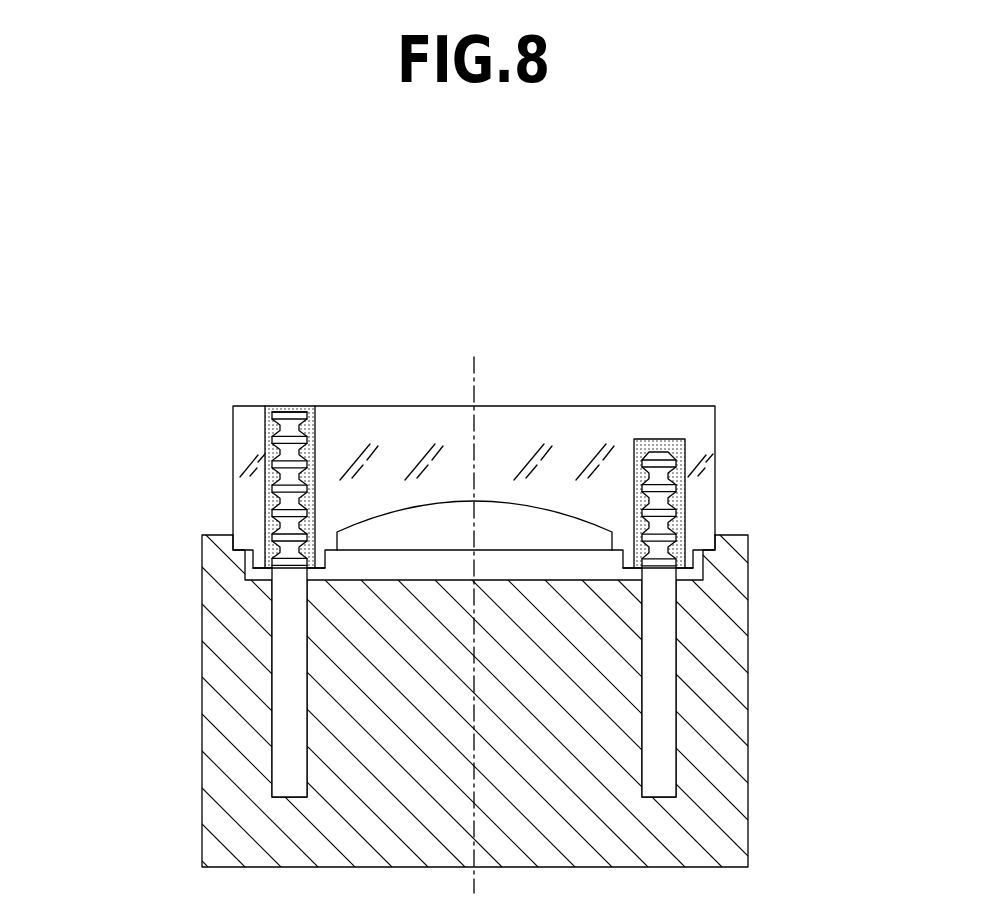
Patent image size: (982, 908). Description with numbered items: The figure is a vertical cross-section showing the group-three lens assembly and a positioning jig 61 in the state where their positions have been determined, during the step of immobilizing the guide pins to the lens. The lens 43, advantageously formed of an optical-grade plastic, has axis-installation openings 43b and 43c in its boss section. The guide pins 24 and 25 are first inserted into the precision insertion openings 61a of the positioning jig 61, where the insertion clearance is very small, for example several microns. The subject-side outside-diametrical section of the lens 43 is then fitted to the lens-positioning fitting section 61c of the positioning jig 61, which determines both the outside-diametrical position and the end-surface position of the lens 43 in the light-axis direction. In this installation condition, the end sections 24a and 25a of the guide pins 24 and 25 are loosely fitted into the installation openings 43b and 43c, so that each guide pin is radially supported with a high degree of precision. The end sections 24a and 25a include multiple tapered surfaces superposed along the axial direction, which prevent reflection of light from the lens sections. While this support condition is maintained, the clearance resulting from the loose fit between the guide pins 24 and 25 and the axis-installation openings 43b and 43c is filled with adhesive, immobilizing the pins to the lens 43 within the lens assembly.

The lens 43 is at (400, 405).
The axis-installation opening 43b is at (265, 500).
The axis-installation opening 43c is at (685, 522).
The guide pin 24 is at (282, 677).
The end section 24a is at (290, 425).
The guide pin 25 is at (662, 700).
The end section 25a is at (658, 453).
The positioning jig 61 is at (748, 836).
The precision insertion opening 61a is at (273, 767).
The lens-positioning fitting section 61c is at (207, 542).